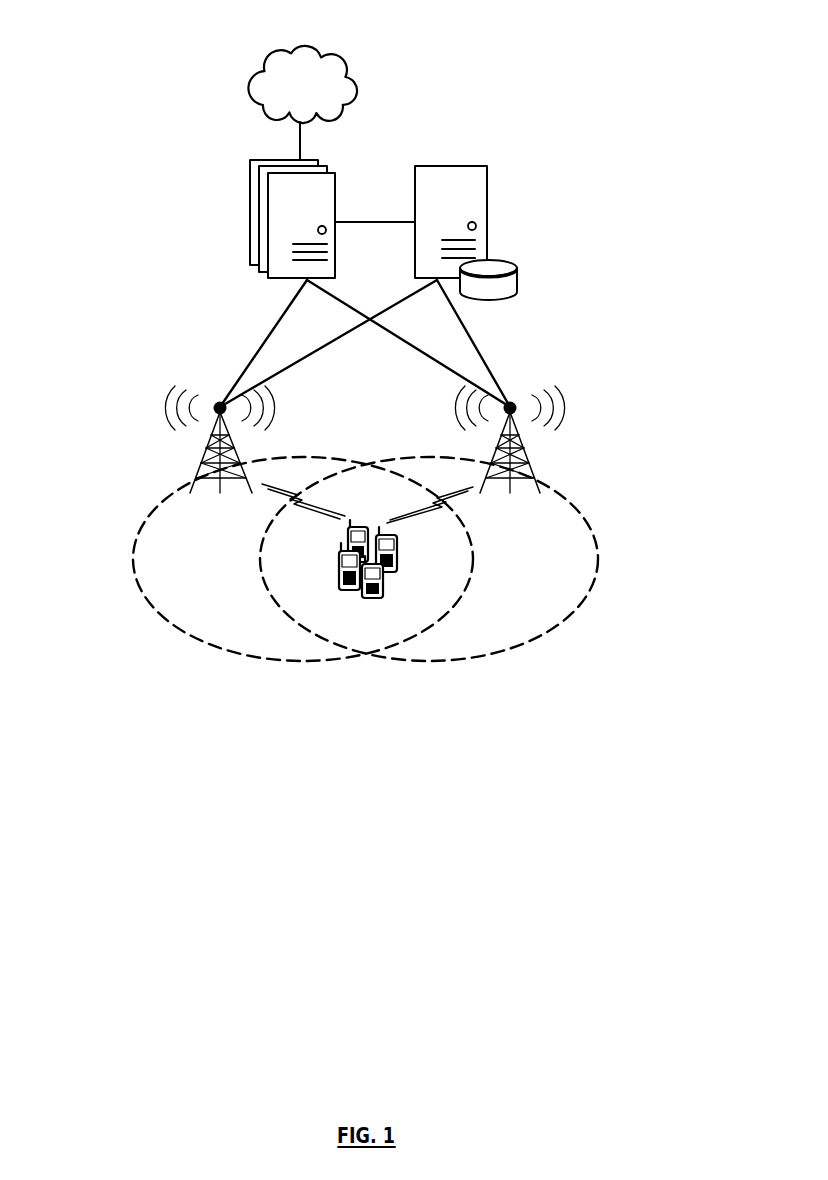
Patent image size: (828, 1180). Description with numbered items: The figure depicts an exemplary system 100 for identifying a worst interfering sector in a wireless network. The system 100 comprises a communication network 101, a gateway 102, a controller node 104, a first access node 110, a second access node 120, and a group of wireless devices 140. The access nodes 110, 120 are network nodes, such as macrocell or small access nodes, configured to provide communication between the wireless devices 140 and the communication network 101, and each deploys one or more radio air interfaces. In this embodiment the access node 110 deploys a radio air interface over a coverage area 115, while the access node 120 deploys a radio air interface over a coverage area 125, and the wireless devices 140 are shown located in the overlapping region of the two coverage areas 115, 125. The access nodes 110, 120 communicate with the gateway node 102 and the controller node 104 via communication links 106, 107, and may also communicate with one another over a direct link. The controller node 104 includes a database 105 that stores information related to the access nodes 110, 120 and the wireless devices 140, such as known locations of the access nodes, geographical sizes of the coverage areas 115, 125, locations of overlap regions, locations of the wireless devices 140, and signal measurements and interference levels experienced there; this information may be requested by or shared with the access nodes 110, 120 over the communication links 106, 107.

The system 100 is at (434, 54).
The communication network 101 is at (283, 97).
The gateway 102 is at (250, 192).
The controller node 104 is at (487, 207).
The database 105 is at (517, 283).
The communication link 106 is at (278, 322).
The communication link 107 is at (357, 312).
The access node 110 is at (208, 460).
The coverage area 115 is at (138, 532).
The access node 120 is at (520, 462).
The coverage area 125 is at (597, 535).
The wireless devices 140 is at (382, 613).